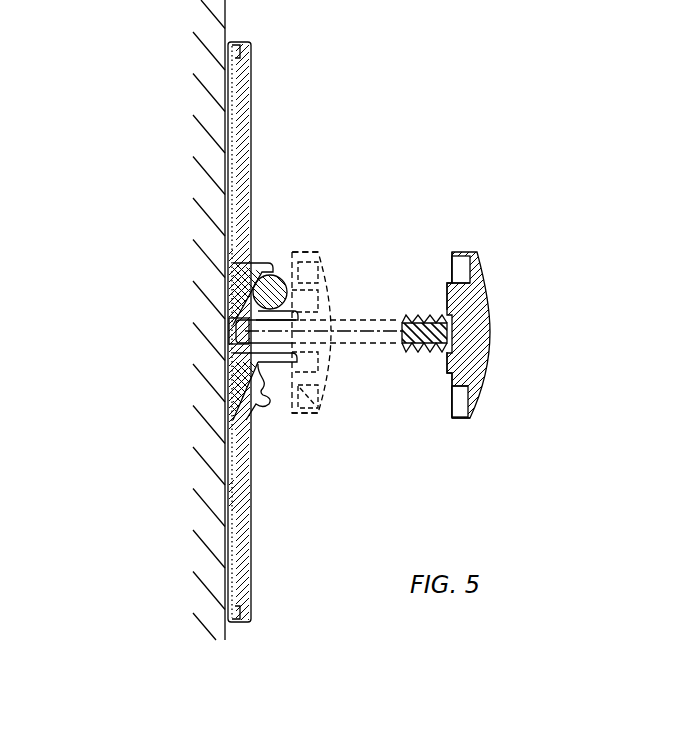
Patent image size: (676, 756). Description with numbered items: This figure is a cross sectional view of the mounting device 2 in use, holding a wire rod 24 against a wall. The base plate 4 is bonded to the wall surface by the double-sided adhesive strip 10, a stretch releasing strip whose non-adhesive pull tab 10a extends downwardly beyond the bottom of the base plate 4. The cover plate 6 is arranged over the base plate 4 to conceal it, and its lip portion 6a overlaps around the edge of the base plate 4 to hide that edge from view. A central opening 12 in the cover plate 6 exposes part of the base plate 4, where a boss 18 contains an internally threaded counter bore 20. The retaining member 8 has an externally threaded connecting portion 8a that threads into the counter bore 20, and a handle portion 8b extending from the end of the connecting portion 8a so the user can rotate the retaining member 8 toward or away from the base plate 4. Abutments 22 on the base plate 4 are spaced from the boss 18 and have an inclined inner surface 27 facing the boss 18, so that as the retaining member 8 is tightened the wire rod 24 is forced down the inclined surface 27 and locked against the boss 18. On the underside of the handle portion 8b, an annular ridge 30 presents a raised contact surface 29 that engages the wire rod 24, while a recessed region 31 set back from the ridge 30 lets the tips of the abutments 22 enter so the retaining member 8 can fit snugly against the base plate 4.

The mounting device 2 is at (128, 115).
The base plate 4 is at (225, 272).
The cover plate 6 is at (252, 80).
The lip portion 6a is at (238, 45).
The retaining member 8 is at (478, 256).
The externally threaded connecting portion 8a is at (410, 346).
The handle portion 8b is at (463, 419).
The double-sided adhesive strip 10 is at (228, 403).
The non-adhesive pull tab 10a is at (228, 495).
The central opening 12 is at (252, 262).
The boss 18 is at (228, 330).
The internally threaded counter bore 20 is at (288, 318).
The abutments 22 is at (270, 262).
The wire rod 24 is at (305, 268).
The inclined inner surface 27 is at (228, 358).
The contact surface 29 is at (227, 292).
The annular ridge 30 is at (300, 378).
The recessed region 31 is at (318, 262).